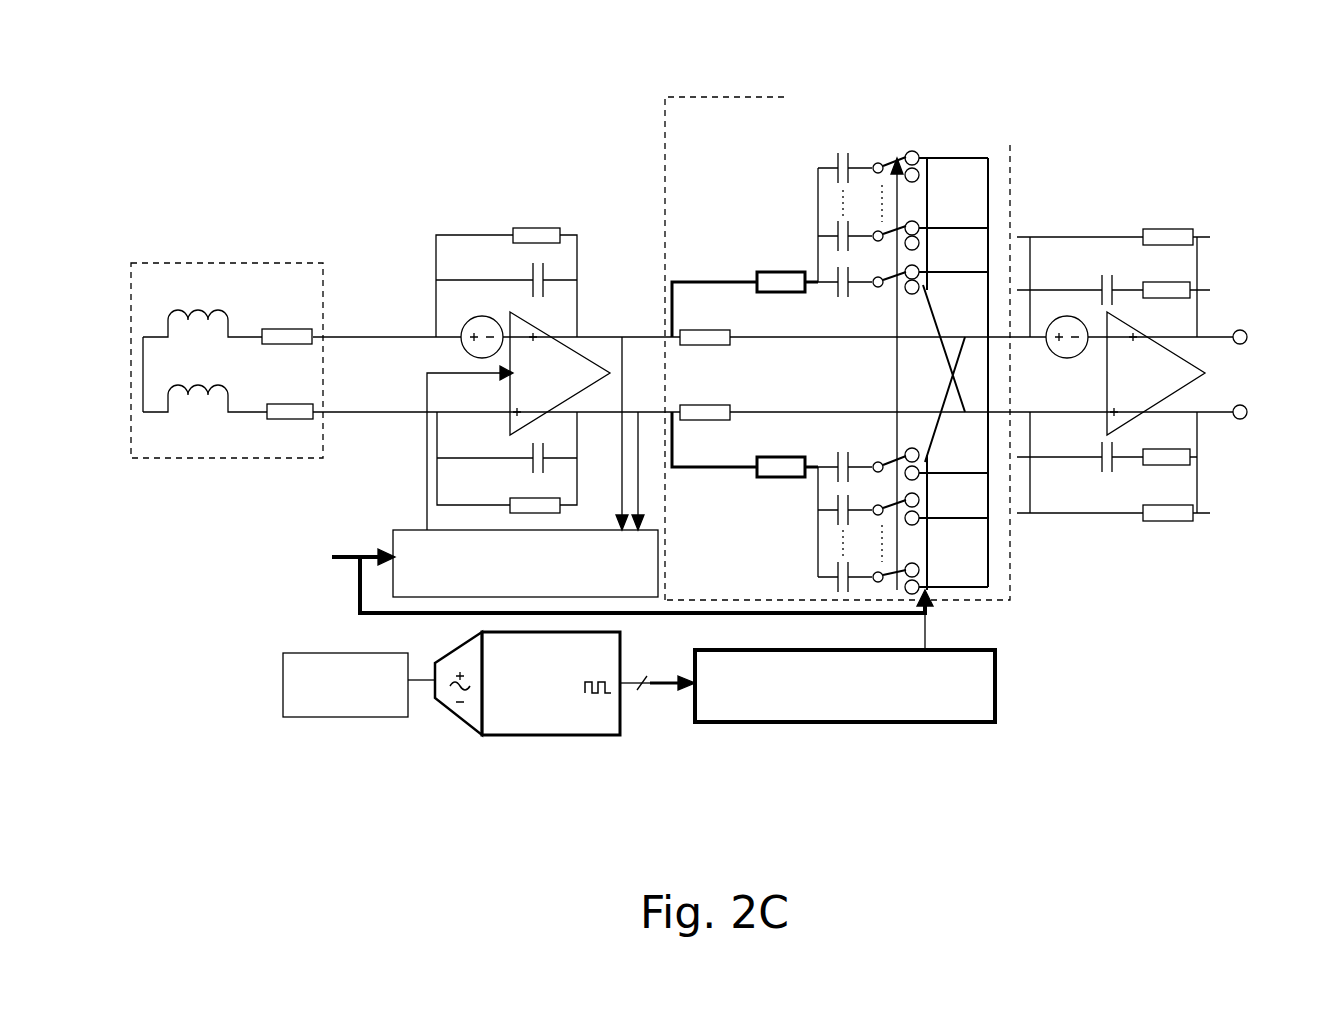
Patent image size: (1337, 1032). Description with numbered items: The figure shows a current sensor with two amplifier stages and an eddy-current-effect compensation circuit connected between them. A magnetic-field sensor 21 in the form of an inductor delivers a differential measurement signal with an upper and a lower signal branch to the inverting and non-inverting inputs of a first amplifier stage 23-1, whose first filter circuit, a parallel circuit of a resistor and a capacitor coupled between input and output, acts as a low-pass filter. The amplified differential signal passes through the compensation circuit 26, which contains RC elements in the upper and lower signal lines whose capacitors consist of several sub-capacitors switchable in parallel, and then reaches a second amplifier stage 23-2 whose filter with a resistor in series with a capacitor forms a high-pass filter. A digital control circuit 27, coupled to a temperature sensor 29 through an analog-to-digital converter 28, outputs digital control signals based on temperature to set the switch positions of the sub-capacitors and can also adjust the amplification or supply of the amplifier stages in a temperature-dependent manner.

The magnetic-field sensor 21 is at (247, 262).
The first amplifier stage 23-1 is at (495, 202).
The second amplifier stage 23-2 is at (1113, 225).
The compensation circuit 26 is at (725, 97).
The digital control circuit 27 is at (810, 725).
The analog-to-digital converter 28 is at (545, 738).
The temperature sensor 29 is at (305, 720).